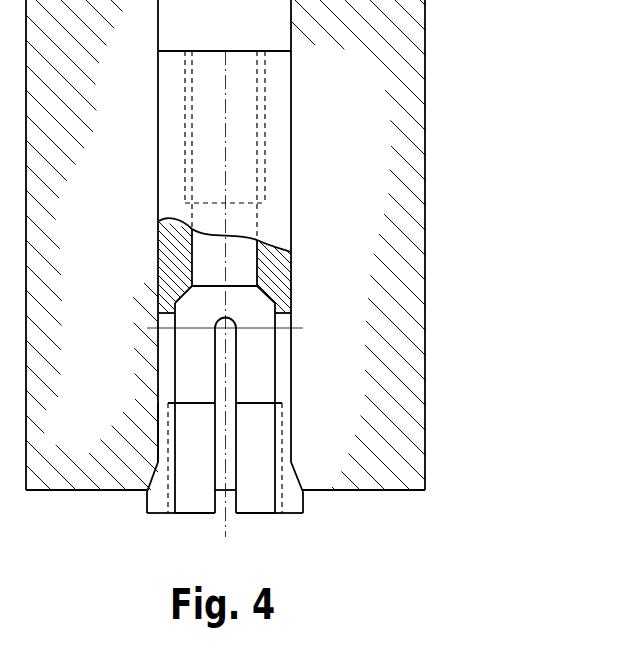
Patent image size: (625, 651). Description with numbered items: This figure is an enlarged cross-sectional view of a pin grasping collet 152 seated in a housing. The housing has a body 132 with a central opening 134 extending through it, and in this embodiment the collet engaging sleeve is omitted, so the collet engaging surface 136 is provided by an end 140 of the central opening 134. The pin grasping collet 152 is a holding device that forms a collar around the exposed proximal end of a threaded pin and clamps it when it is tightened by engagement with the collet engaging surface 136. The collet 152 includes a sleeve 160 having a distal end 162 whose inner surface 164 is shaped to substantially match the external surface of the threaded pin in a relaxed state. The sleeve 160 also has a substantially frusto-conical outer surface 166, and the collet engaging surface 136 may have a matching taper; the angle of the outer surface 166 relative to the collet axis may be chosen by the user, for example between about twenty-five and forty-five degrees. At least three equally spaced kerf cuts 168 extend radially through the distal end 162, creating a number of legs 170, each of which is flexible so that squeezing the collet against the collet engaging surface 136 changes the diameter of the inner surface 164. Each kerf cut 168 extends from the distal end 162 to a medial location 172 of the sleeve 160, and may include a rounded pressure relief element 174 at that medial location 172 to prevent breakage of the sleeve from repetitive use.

The body 132 is at (397, 148).
The central opening 134 is at (293, 232).
The collet engaging surface 136 is at (140, 467).
The end of central opening 140 is at (157, 462).
The pin grasping collet 152 is at (309, 155).
The sleeve 160 is at (164, 355).
The distal end 162 is at (314, 513).
The inner surface 164 is at (276, 497).
The frusto-conical outer surface 166 is at (294, 463).
The kerf cut 168 is at (222, 500).
The leg 170 is at (156, 507).
The medial location 172 is at (183, 285).
The rounded pressure relief element 174 is at (239, 326).